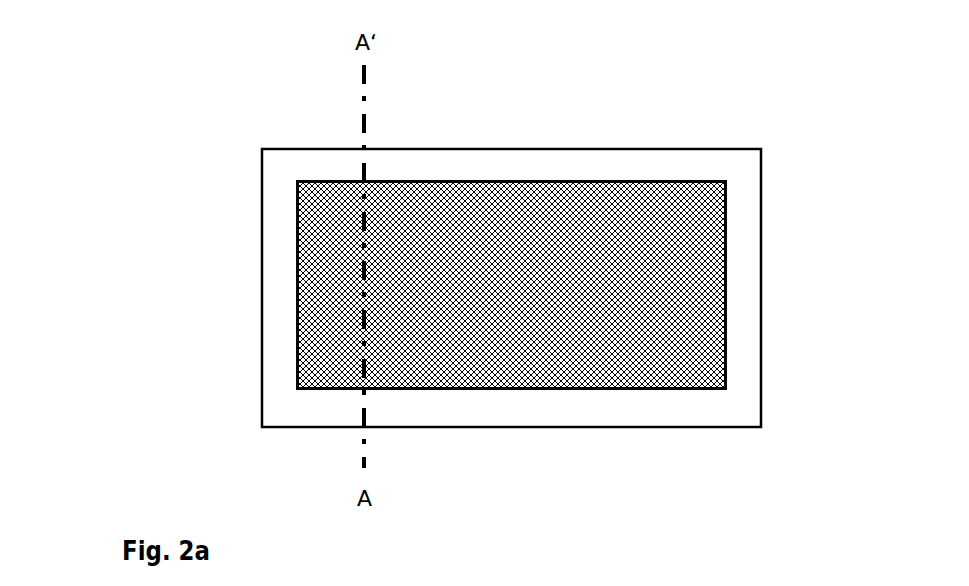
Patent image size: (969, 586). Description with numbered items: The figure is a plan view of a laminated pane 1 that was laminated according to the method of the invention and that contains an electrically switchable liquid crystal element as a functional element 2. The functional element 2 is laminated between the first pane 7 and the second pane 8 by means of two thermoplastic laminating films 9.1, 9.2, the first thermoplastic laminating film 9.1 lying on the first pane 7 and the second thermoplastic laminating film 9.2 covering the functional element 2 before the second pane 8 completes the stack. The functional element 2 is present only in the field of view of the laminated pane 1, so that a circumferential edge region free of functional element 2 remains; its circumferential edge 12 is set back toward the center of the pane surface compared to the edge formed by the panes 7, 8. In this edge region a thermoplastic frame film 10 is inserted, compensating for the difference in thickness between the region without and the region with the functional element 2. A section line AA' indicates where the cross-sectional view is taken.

The laminated pane 1 is at (581, 96).
The functional element 2 is at (626, 358).
The first pane 7 is at (379, 254).
The second pane 8 is at (379, 254).
The first thermoplastic laminating film 9.1 is at (379, 254).
The second thermoplastic laminating film 9.2 is at (288, 177).
The thermoplastic frame film 10 is at (278, 308).
The circumferential edge 12 is at (740, 283).